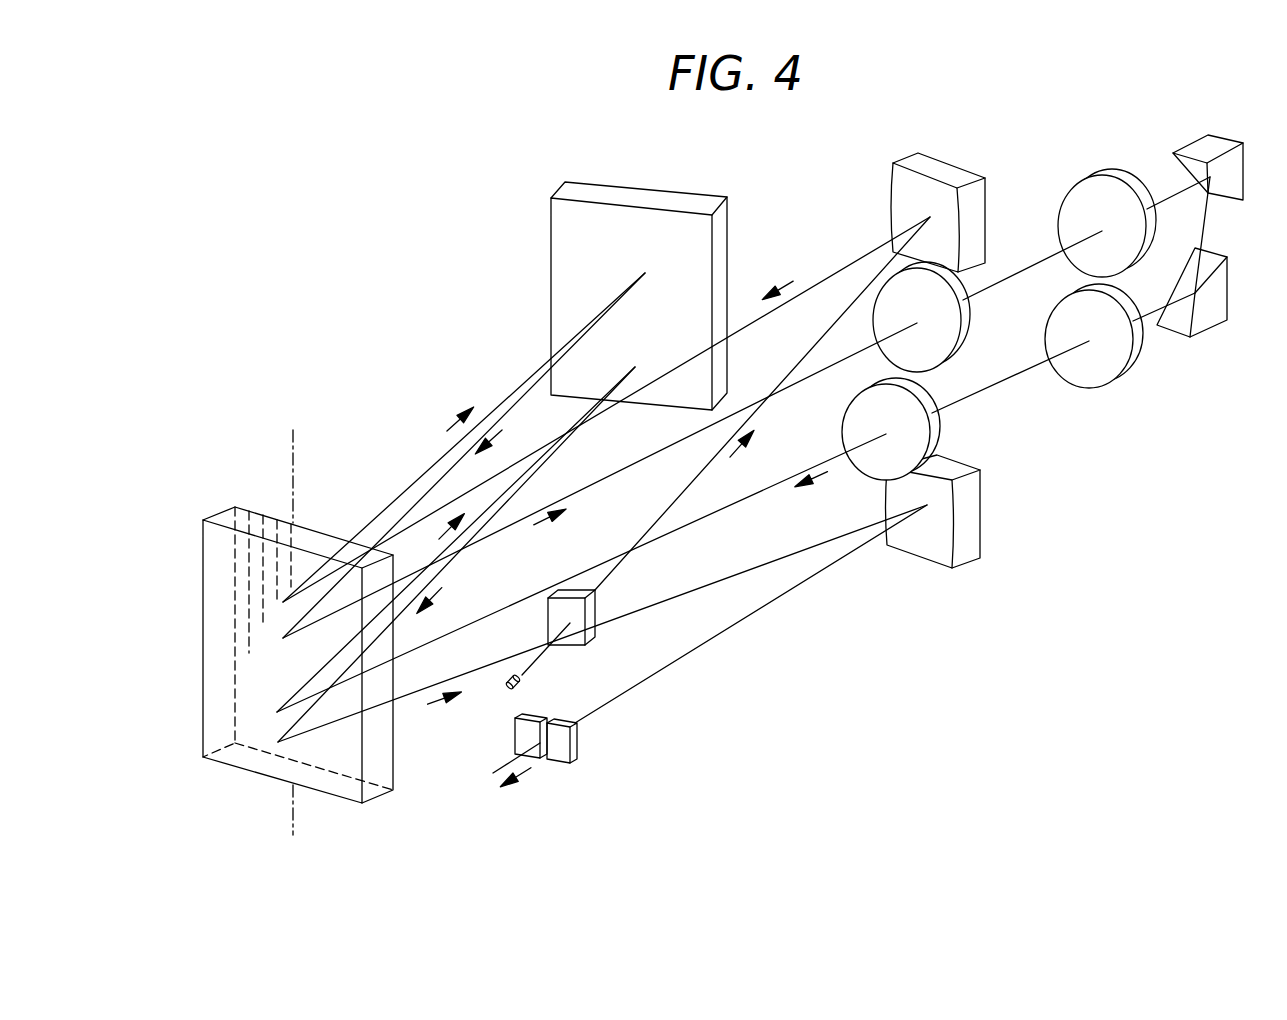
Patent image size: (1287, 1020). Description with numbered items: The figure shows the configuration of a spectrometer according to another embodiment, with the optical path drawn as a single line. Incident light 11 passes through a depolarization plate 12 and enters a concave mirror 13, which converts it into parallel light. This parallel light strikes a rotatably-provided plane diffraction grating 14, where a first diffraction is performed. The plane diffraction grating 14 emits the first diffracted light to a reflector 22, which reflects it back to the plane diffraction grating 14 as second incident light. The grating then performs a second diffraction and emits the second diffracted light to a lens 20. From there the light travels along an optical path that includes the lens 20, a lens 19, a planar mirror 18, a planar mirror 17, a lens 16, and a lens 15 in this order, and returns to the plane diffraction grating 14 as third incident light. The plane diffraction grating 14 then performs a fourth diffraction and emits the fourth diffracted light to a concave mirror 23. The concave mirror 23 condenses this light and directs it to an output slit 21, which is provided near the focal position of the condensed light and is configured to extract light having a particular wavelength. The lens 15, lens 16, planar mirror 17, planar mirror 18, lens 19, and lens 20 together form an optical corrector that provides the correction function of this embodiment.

The incident light 11 is at (523, 682).
The depolarization plate 12 is at (555, 612).
The concave mirror 13 is at (928, 160).
The plane diffraction grating 14 is at (225, 518).
The lens 15 is at (860, 407).
The lens 16 is at (1110, 365).
The planar mirror 17 is at (1215, 313).
The planar mirror 18 is at (1215, 137).
The lens 19 is at (1082, 192).
The lens 20 is at (943, 322).
The output slit 21 is at (562, 745).
The reflector 22 is at (578, 190).
The concave mirror 23 is at (958, 468).